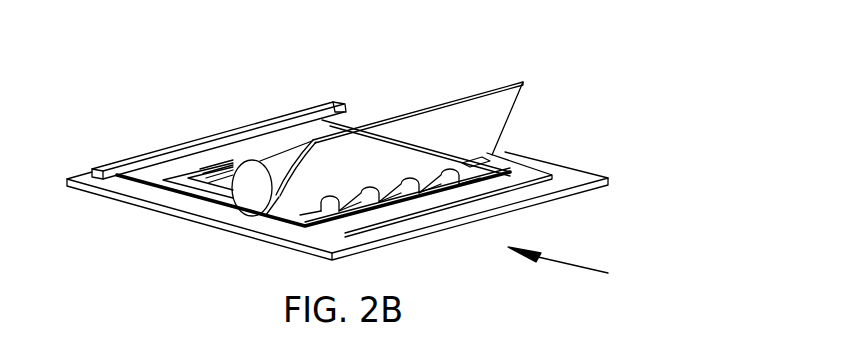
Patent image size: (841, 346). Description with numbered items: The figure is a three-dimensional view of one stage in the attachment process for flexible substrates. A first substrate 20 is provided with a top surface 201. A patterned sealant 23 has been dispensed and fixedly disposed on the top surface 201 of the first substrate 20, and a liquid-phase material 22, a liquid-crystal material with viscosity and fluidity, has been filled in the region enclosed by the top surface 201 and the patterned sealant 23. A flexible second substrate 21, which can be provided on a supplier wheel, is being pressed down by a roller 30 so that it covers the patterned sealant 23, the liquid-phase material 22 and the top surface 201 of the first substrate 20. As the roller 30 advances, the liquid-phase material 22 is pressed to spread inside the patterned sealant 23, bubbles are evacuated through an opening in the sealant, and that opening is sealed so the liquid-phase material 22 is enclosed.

The first substrate 20 is at (590, 188).
The top surface 201 is at (572, 174).
The second substrate 21 is at (500, 108).
The liquid-phase material 22 is at (402, 188).
The patterned sealant 23 is at (476, 162).
The roller 30 is at (247, 190).